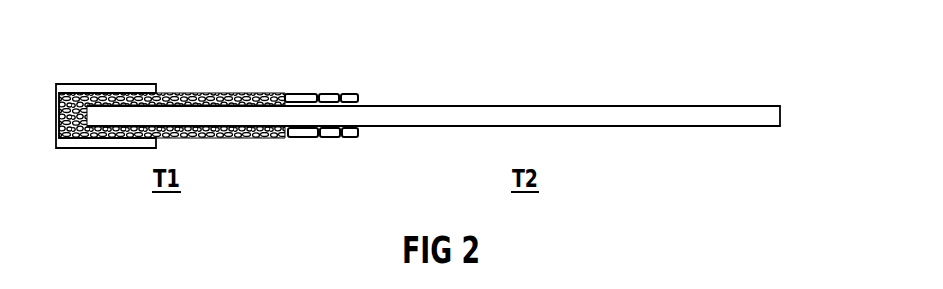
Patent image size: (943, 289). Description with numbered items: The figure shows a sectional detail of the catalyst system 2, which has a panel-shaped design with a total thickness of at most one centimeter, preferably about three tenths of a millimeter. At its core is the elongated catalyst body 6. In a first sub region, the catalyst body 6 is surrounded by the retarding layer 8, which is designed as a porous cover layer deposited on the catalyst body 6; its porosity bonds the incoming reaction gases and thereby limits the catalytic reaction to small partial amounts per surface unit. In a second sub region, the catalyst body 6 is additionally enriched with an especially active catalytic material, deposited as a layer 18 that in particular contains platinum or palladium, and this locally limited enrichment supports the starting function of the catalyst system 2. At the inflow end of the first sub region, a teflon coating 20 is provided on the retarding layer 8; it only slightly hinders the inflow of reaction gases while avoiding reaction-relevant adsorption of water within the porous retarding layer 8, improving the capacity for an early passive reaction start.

The catalyst system 2 is at (393, 65).
The catalyst body 6 is at (552, 115).
The retarding layer 8 is at (202, 93).
The layer 18 is at (317, 93).
The teflon coating 20 is at (97, 84).